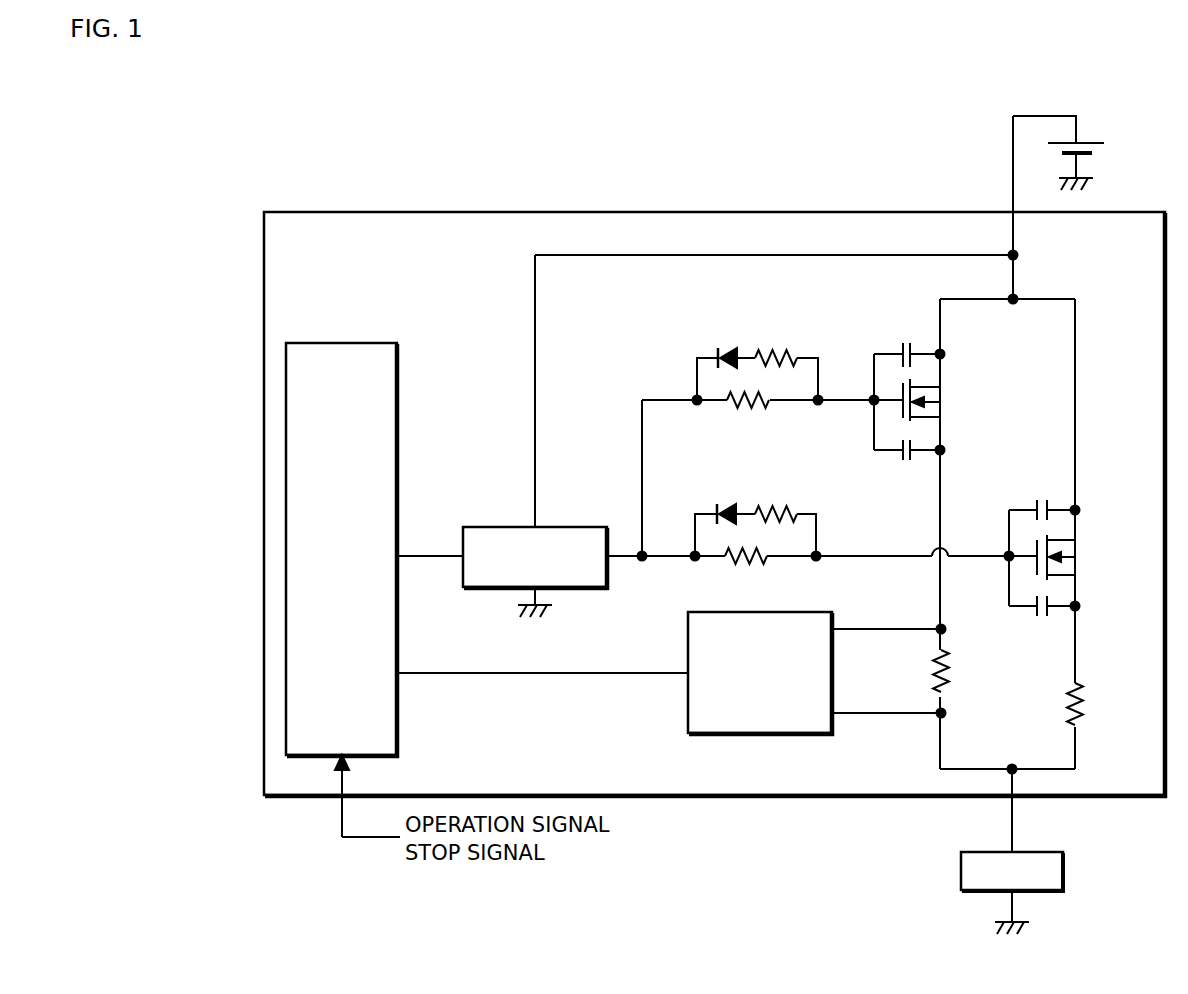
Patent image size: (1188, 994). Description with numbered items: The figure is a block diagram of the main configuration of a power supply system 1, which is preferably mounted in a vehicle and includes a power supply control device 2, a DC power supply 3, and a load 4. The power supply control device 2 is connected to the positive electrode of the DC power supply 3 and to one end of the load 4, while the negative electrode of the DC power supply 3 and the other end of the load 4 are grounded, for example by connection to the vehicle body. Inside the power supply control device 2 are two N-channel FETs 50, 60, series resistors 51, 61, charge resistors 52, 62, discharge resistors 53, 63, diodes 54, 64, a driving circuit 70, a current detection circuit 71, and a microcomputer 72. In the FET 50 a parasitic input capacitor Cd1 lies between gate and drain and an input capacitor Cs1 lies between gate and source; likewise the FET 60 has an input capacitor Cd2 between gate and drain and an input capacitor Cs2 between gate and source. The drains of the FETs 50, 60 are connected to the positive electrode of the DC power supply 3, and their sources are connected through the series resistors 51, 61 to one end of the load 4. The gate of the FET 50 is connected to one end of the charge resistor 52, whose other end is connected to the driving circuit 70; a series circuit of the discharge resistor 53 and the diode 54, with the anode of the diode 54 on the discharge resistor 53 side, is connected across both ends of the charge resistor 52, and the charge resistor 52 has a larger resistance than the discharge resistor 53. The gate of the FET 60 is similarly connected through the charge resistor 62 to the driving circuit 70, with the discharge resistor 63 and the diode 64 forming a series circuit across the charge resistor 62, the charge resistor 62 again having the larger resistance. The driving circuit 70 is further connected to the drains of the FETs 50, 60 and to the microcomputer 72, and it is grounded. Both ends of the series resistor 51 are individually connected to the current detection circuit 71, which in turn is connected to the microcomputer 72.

The power supply system 1 is at (712, 145).
The power supply control device 2 is at (334, 212).
The DC power supply 3 is at (1104, 152).
The load 4 is at (1065, 866).
The N-channel FET 50 is at (940, 400).
The series resistor 51 is at (950, 678).
The charge resistor 52 is at (745, 408).
The discharge resistor 53 is at (787, 352).
The diode 54 is at (730, 346).
The N-channel FET 60 is at (1075, 550).
The series resistor 61 is at (1084, 706).
The charge resistor 62 is at (745, 564).
The discharge resistor 63 is at (793, 482).
The diode 64 is at (730, 502).
The driving circuit 70 is at (556, 527).
The current detection circuit 71 is at (778, 735).
The microcomputer 72 is at (370, 343).
The input capacitor Cd1 is at (906, 341).
The input capacitor Cs1 is at (906, 464).
The input capacitor Cd2 is at (1043, 497).
The input capacitor Cs2 is at (1043, 620).